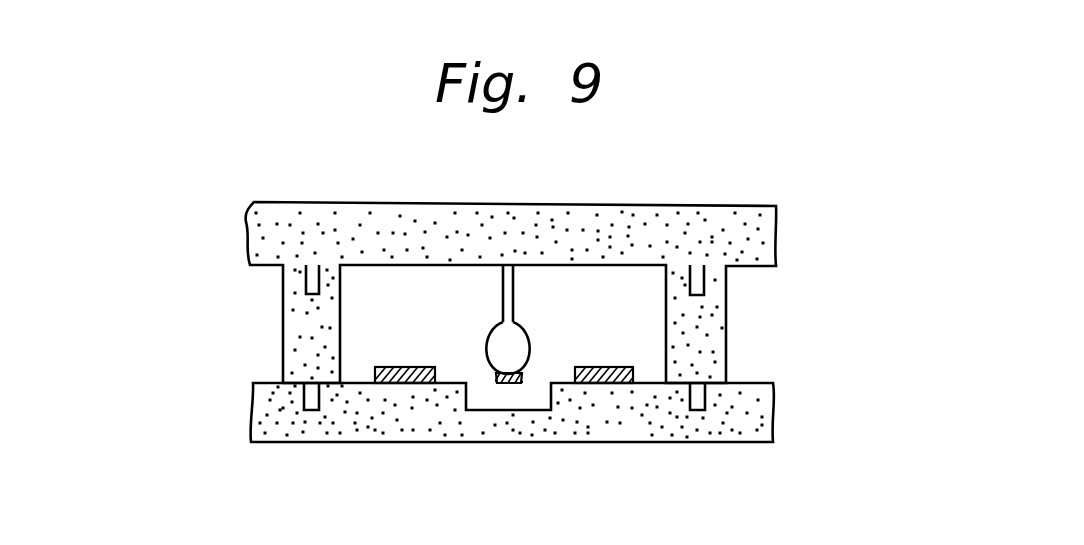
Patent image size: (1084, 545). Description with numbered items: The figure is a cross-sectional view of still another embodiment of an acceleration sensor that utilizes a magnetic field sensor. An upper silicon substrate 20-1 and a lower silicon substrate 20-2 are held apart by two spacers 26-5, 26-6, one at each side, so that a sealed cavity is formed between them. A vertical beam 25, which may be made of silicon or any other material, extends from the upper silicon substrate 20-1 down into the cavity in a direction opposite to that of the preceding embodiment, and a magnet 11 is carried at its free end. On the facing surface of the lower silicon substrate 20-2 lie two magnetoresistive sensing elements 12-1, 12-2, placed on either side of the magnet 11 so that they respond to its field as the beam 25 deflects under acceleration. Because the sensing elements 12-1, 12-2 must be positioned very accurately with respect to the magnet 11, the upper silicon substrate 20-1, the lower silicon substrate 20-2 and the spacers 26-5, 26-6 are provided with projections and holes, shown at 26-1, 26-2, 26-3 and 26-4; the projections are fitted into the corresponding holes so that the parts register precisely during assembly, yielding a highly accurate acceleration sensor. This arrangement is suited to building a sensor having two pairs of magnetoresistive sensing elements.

The upper silicon substrate 20-1 is at (776, 230).
The lower silicon substrate 20-2 is at (773, 415).
The projection and hole 26-1 is at (312, 383).
The projection and hole 26-2 is at (300, 287).
The projection and hole 26-3 is at (698, 382).
The projection and hole 26-4 is at (710, 289).
The spacer 26-5 is at (295, 327).
The spacer 26-6 is at (727, 326).
The vertical beam 25 is at (513, 300).
The magnet 11 is at (522, 373).
The magnetoresistive sensing element 12-1 is at (402, 383).
The magnetoresistive sensing element 12-2 is at (602, 383).